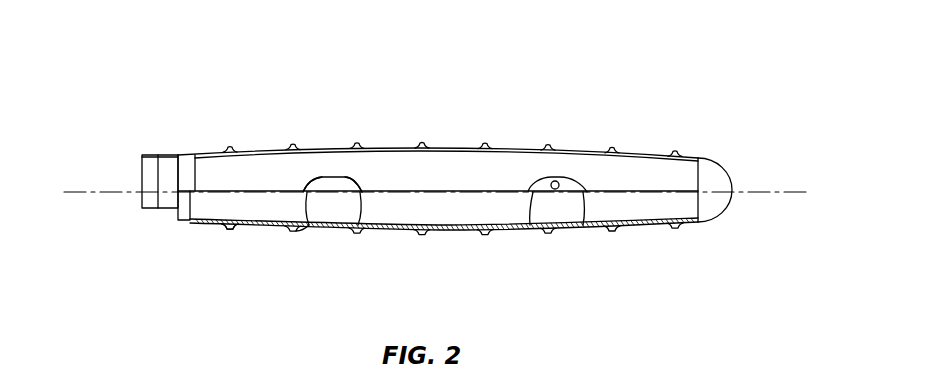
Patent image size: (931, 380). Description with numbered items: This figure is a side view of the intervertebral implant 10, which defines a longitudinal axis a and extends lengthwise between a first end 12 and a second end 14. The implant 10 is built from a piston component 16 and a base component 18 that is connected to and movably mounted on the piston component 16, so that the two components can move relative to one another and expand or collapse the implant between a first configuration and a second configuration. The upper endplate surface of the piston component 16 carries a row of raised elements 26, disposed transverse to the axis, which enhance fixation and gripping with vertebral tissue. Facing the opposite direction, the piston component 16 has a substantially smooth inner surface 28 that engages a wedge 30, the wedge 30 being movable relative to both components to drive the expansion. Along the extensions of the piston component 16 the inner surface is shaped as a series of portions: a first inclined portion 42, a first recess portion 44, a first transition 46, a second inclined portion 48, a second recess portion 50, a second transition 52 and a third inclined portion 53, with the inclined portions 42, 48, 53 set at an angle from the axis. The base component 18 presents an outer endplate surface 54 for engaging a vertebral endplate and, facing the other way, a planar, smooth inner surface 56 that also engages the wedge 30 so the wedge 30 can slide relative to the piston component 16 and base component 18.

The intervertebral implant 10 is at (170, 49).
The first end 12 is at (752, 166).
The second end 14 is at (122, 213).
The piston component 16 is at (518, 148).
The base component 18 is at (398, 233).
The raised elements 26 is at (422, 148).
The inner surface 28 is at (707, 190).
The wedge 30 is at (334, 180).
The first inclined portion 42 is at (585, 226).
The first recess portion 44 is at (564, 180).
The first transition 46 is at (528, 222).
The second inclined portion 48 is at (344, 183).
The second recess portion 50 is at (316, 198).
The second transition 52 is at (307, 224).
The endplate surface 54 is at (247, 227).
The third inclined portion 53 is at (172, 160).
The inner surface 56 is at (213, 191).